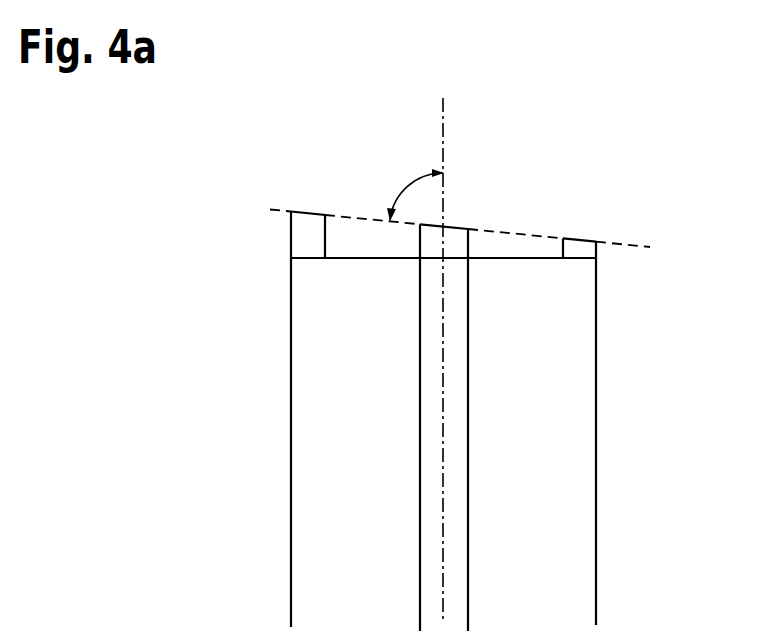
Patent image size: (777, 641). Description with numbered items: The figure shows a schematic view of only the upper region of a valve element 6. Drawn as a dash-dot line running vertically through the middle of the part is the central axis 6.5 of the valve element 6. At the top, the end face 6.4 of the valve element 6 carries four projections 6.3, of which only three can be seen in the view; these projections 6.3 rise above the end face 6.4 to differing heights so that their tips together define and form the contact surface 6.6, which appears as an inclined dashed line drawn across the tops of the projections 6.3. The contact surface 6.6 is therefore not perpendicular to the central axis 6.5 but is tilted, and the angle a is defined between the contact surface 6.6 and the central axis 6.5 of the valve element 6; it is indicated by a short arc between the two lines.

The valve element 6 is at (620, 508).
The projection 6.3 is at (300, 204).
The end face 6.4 is at (339, 268).
The central axis 6.5 is at (443, 387).
The contact surface 6.6 is at (651, 240).
The angle a is at (405, 183).